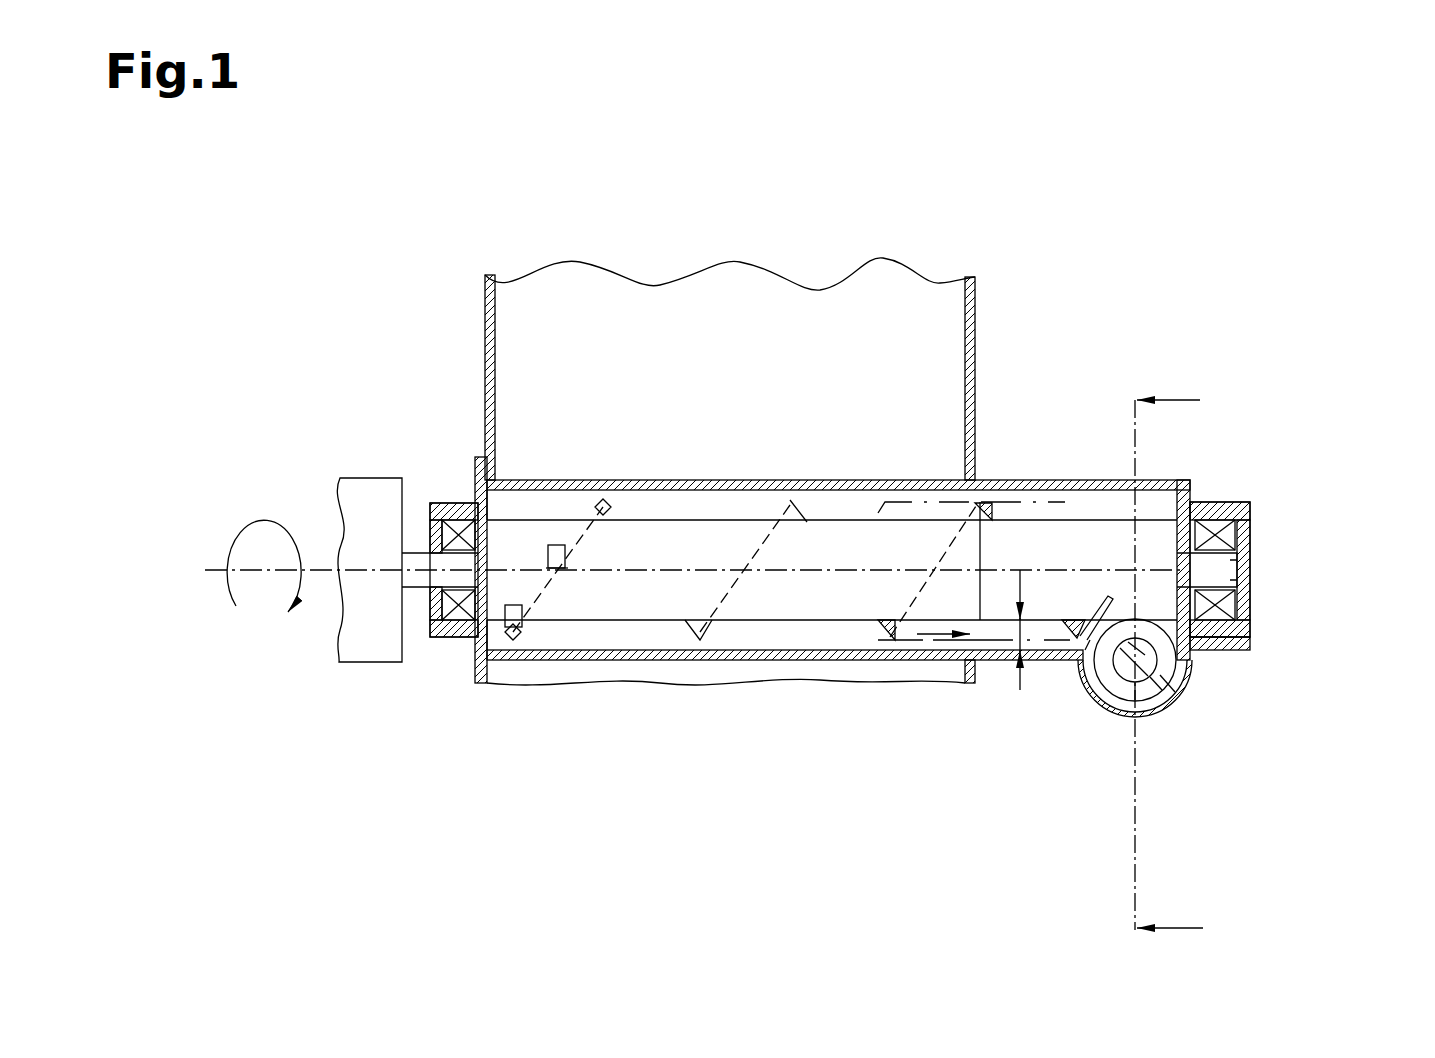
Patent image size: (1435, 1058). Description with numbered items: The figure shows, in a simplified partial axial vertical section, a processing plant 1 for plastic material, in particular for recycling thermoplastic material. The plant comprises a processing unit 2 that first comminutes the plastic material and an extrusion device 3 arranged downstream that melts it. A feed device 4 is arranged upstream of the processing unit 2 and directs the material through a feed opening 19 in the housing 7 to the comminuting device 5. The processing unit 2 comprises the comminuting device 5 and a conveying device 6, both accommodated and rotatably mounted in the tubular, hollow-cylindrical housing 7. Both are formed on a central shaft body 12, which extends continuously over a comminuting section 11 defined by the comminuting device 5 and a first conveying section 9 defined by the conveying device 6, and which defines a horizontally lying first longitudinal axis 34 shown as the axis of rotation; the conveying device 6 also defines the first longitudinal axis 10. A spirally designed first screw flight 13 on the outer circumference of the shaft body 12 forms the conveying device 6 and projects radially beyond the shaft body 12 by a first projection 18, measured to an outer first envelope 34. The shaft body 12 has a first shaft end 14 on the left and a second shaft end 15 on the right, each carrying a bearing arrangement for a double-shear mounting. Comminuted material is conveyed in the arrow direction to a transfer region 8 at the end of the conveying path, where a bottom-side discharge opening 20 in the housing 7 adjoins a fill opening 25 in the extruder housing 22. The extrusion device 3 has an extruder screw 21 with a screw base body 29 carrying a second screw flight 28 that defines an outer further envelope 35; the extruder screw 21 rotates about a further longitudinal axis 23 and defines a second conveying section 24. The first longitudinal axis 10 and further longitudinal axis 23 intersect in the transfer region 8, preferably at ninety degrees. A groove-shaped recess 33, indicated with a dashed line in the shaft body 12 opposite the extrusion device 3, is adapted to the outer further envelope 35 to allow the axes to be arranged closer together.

The processing plant 1 is at (1310, 251).
The processing unit 2 is at (880, 712).
The extrusion device 3 is at (1212, 692).
The feed device 4 is at (779, 353).
The comminuting device 5 is at (649, 512).
The conveying device 6 is at (1105, 511).
The housing 7 is at (575, 655).
The transfer region 8 is at (1162, 620).
The first conveying section 9 is at (1180, 470).
The first longitudinal axis 10 is at (1007, 566).
The comminuting section 11 is at (497, 437).
The shaft body 12 is at (1037, 545).
The first screw flight 13 is at (1087, 623).
The first shaft end 14 is at (464, 562).
The second shaft end 15 is at (1232, 557).
The first projection 18 is at (1018, 670).
The feed opening 19 is at (779, 482).
The discharge opening 20 is at (1195, 650).
The extruder screw 21 is at (1095, 700).
The extruder housing 22 is at (1110, 706).
The further longitudinal axis 23 is at (1210, 705).
The second conveying section 24 is at (1124, 706).
The fill opening 25 is at (1090, 680).
The second screw flight 28 is at (1170, 700).
The screw base body 29 is at (1145, 715).
The recess 33 is at (1175, 488).
The outer first envelope 34 is at (880, 610).
The outer further envelope 35 is at (1185, 667).